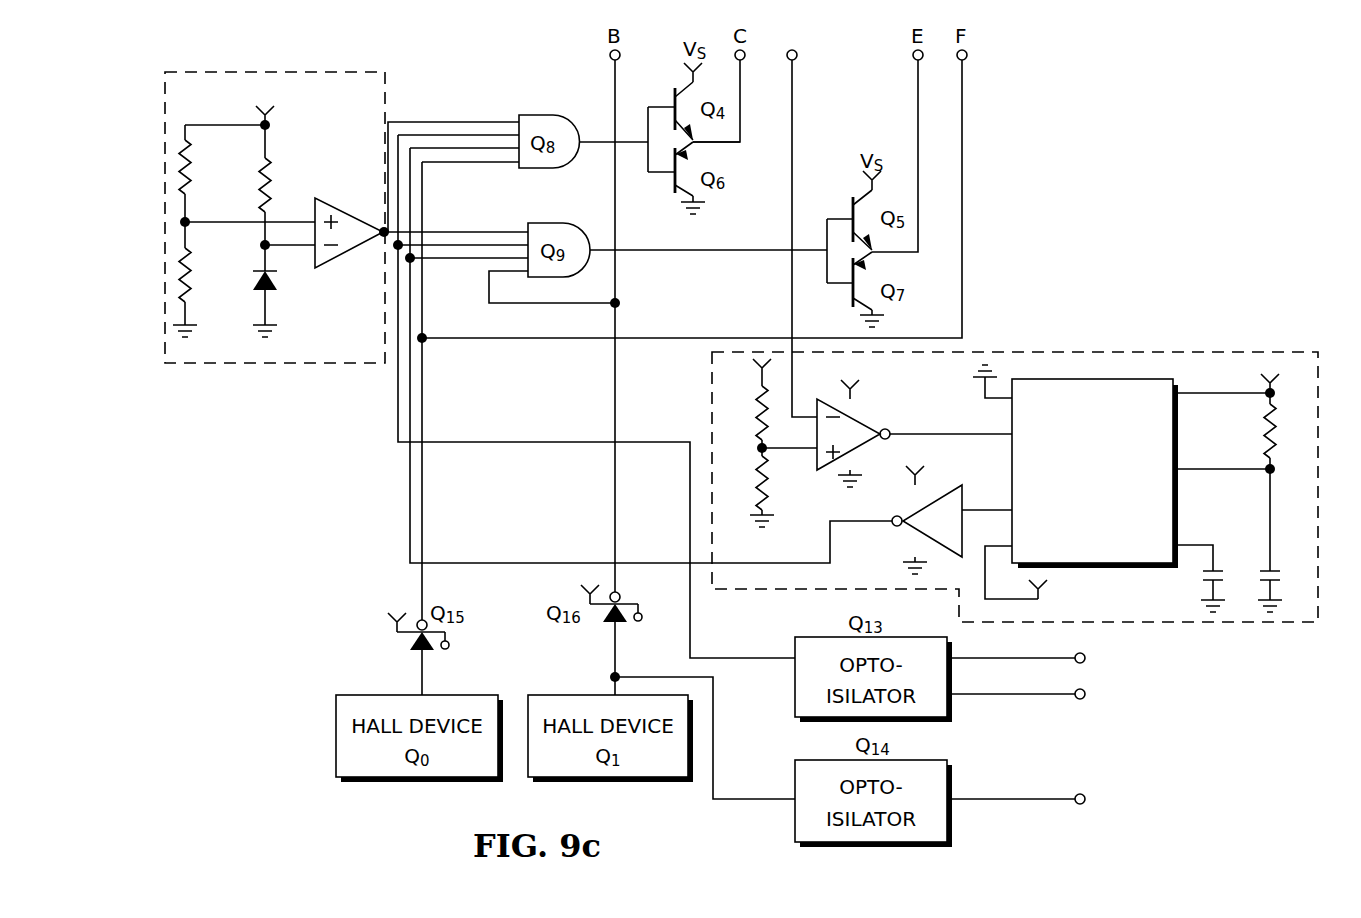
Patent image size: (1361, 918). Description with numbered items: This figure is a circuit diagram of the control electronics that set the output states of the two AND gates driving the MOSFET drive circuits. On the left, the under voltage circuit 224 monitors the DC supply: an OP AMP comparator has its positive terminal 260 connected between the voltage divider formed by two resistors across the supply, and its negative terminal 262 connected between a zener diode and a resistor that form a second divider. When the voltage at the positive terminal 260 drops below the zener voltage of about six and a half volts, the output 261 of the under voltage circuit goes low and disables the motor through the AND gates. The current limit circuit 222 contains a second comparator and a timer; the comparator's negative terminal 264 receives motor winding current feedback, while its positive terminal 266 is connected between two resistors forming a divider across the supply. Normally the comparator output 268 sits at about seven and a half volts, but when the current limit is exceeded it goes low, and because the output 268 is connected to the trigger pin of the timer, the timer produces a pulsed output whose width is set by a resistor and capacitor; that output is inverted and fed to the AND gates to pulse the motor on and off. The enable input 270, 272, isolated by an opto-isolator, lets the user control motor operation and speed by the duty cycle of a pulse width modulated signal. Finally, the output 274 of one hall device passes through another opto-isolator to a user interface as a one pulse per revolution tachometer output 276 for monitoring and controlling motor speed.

The current limit circuit 222 is at (1225, 352).
The under voltage circuit 224 is at (345, 72).
The positive terminal 260 is at (258, 222).
The output 261 is at (381, 228).
The negative terminal 262 is at (293, 248).
The negative terminal 264 is at (792, 322).
The positive terminal 266 is at (782, 452).
The output 268 is at (925, 432).
The enable input 270 is at (978, 658).
The enable input 272 is at (982, 694).
The output of hall device Q1 274 is at (610, 648).
The tachometer output 276 is at (993, 799).